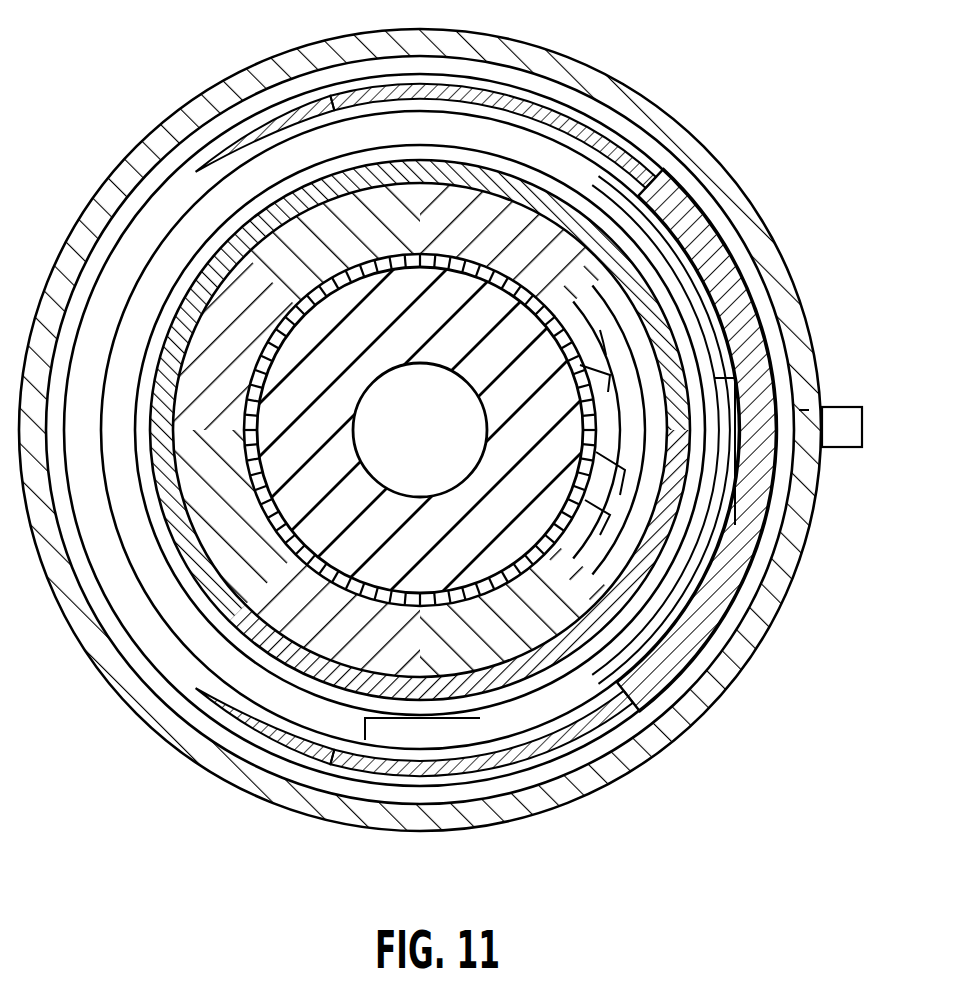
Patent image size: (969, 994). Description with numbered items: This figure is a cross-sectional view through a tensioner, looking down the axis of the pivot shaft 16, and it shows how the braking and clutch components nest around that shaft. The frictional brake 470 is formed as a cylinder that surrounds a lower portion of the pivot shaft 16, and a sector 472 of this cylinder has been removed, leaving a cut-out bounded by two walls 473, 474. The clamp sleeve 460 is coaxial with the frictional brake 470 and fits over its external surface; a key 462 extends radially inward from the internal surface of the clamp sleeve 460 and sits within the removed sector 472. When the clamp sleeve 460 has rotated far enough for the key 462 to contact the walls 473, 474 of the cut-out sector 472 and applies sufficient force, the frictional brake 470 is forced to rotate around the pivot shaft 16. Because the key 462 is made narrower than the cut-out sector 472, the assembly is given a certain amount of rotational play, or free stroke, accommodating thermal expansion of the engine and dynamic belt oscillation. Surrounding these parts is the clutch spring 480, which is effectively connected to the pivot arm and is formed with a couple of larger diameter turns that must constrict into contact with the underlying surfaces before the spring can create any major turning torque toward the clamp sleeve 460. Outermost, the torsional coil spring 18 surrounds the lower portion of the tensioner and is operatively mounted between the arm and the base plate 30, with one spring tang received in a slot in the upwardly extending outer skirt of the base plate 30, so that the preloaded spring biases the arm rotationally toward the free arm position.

The pivot shaft 16 is at (363, 373).
The torsional coil spring 18 is at (665, 185).
The base plate 30 is at (712, 678).
The clamp sleeve 460 is at (203, 587).
The key 462 is at (600, 462).
The frictional brake 470 is at (565, 300).
The removed sector 472 is at (600, 385).
The wall of cut-out sector 473 is at (585, 355).
The wall of cut-out sector 474 is at (600, 510).
The clutch spring 480 is at (505, 195).